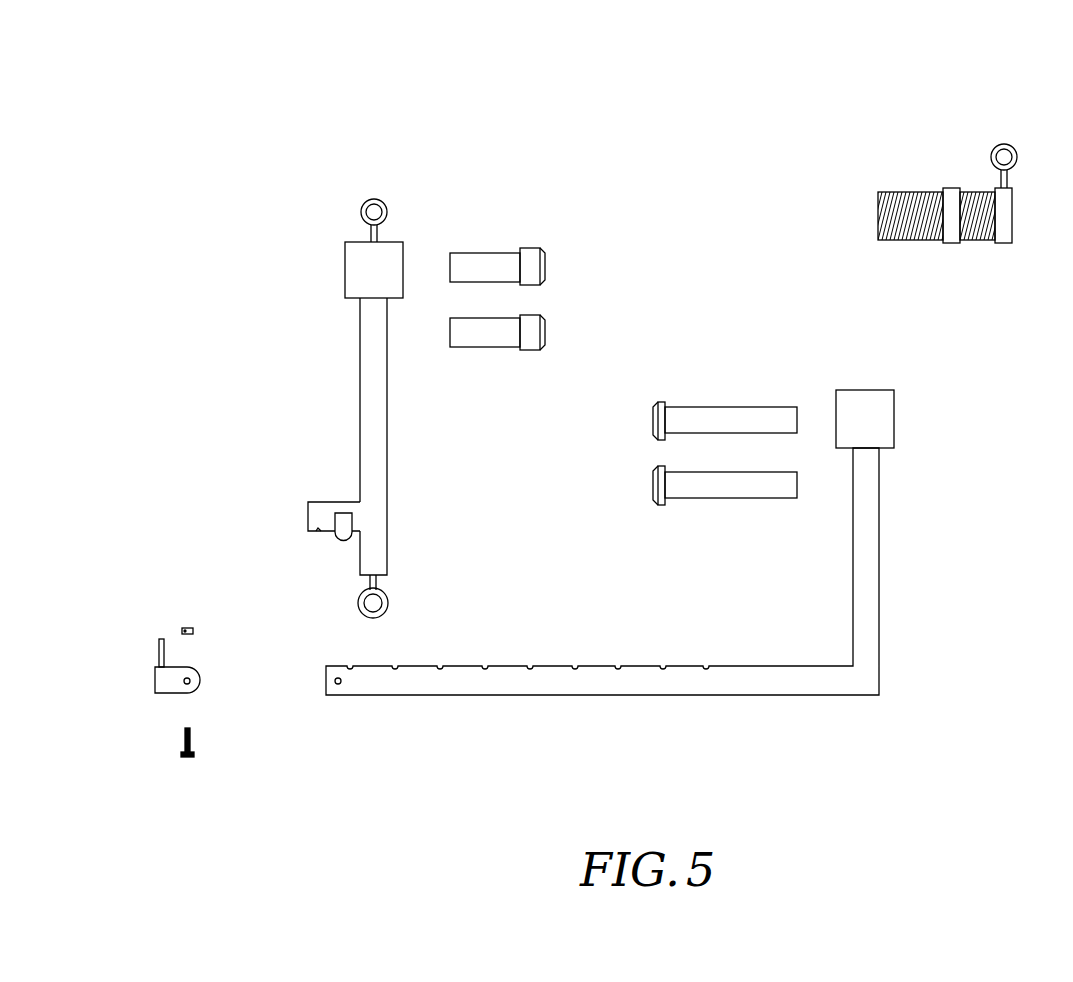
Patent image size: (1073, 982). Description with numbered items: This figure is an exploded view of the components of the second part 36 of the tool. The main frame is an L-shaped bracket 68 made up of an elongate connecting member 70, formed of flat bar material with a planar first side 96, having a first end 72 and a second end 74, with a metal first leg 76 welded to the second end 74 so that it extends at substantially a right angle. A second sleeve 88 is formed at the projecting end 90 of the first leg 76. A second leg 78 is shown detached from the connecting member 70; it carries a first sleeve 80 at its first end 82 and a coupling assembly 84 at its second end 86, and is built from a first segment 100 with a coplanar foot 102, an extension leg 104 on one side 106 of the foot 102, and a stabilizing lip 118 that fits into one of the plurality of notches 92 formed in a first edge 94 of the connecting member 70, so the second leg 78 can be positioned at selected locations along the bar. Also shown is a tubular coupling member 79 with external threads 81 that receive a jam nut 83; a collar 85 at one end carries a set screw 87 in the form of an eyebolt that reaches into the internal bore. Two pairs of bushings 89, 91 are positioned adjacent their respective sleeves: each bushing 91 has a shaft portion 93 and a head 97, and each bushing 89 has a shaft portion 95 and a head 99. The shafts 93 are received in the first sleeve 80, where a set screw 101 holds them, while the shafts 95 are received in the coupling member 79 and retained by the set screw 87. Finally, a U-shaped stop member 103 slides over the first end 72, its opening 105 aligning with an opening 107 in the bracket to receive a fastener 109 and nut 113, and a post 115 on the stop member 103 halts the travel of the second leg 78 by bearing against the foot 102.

The second part 36 is at (608, 118).
The L-shaped bracket 68 is at (882, 697).
The connecting member 70 is at (595, 676).
The first end 72 is at (326, 684).
The second end 74 is at (872, 665).
The first leg 76 is at (880, 558).
The second leg 78 is at (358, 400).
The coupling member 79 is at (1015, 188).
The first sleeve 80 is at (343, 243).
The external threads 81 is at (880, 192).
The first end 82 is at (360, 303).
The jam nut 83 is at (950, 188).
The coupling assembly 84 is at (283, 505).
The collar 85 is at (1005, 244).
The second end 86 is at (358, 502).
The set screw 87 is at (1003, 143).
The second sleeve 88 is at (895, 393).
The bushings 89 is at (733, 405).
The projecting end 90 is at (880, 450).
The bushings 91 is at (485, 258).
The notches 92 is at (530, 664).
The shaft portion 93 is at (483, 272).
The first edge 94 is at (686, 664).
The shaft portion 95 is at (680, 410).
The first side 96 is at (755, 680).
The head 97 is at (540, 265).
The head 99 is at (656, 410).
The first segment 100 is at (388, 395).
The set screw 101 is at (366, 203).
The foot 102 is at (327, 502).
The stop member 103 is at (150, 678).
The extension leg 104 is at (343, 544).
The opening 105 is at (185, 688).
The side 106 is at (388, 465).
The opening 107 is at (342, 688).
The fastener 109 is at (205, 745).
The nut 113 is at (194, 631).
The post 115 is at (158, 640).
The stabilizing lip 118 is at (320, 533).